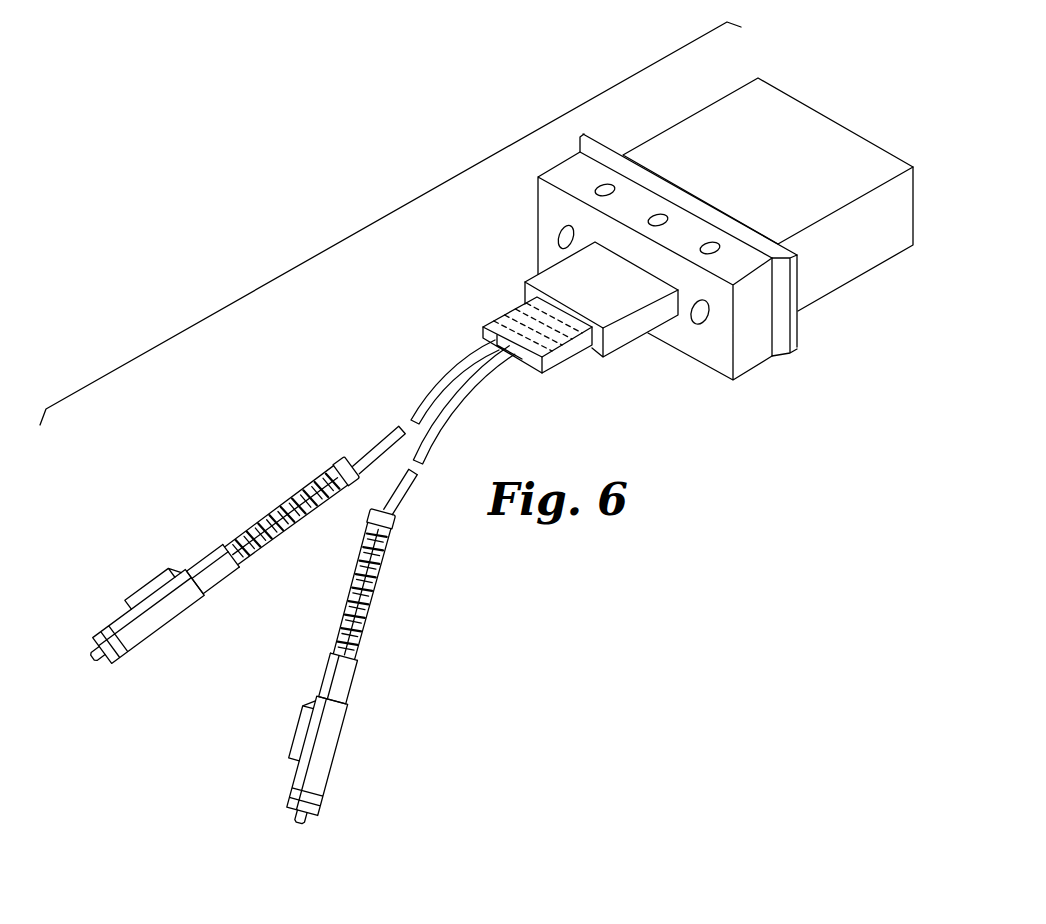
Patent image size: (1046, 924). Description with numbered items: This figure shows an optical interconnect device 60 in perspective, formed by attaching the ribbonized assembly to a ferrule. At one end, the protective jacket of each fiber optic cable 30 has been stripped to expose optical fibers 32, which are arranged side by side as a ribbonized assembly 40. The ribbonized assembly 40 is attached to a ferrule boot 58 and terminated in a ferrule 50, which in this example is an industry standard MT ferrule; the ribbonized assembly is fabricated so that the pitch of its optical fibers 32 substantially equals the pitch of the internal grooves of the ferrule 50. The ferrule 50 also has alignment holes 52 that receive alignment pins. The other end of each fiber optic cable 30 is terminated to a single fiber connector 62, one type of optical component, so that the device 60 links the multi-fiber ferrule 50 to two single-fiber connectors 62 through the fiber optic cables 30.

The fiber optic cable 30 is at (438, 380).
The optical fibers 32 is at (519, 350).
The ribbonized assembly 40 is at (555, 360).
The ferrule 50 is at (720, 113).
The alignment holes 52 is at (694, 322).
The ferrule boot 58 is at (558, 272).
The optical interconnect device 60 is at (377, 221).
The single fiber connector 62 is at (345, 688).